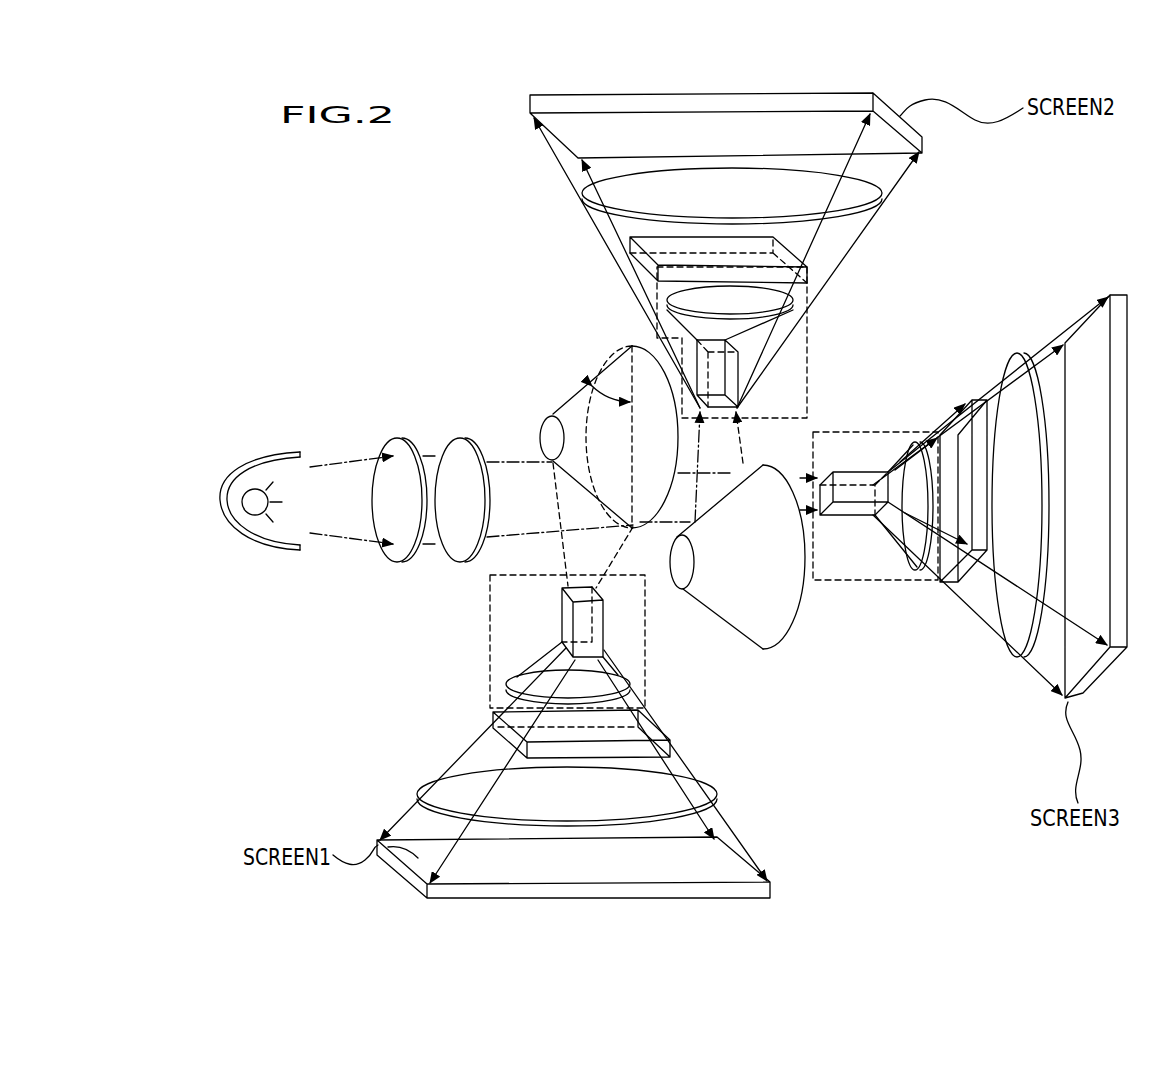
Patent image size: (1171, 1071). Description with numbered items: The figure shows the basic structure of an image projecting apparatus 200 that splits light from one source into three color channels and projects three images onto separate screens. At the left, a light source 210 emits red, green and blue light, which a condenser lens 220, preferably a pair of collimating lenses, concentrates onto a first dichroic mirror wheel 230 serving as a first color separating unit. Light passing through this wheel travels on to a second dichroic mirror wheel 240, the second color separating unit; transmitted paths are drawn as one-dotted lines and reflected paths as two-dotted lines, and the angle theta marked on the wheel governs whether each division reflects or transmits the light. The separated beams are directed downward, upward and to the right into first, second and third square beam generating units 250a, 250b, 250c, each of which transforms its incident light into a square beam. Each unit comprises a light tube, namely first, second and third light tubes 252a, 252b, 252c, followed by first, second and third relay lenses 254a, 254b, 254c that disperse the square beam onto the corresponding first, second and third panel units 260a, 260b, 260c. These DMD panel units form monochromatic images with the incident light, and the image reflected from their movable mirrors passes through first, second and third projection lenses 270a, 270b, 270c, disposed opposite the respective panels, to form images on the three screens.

The image projecting apparatus 200 is at (328, 234).
The light source 210 is at (244, 548).
The condenser lens 220 is at (455, 565).
The first dichroic mirror wheel 230 is at (585, 392).
The second dichroic mirror wheel 240 is at (773, 625).
The first square beam generating unit 250a is at (648, 684).
The first light tube 252a is at (604, 628).
The first relay lens 254a is at (508, 680).
The first panel unit 260a is at (494, 716).
The first projection lens 270a is at (433, 786).
The second square beam generating unit 250b is at (808, 412).
The second light tube 252b is at (740, 378).
The second relay lens 254b is at (795, 312).
The second panel unit 260b is at (808, 276).
The second projection lens 270b is at (883, 192).
The third square beam generating unit 250c is at (887, 582).
The third light tube 252c is at (848, 514).
The third relay lens 254c is at (915, 569).
The third panel unit 260c is at (940, 585).
The third projection lens 270c is at (1020, 640).